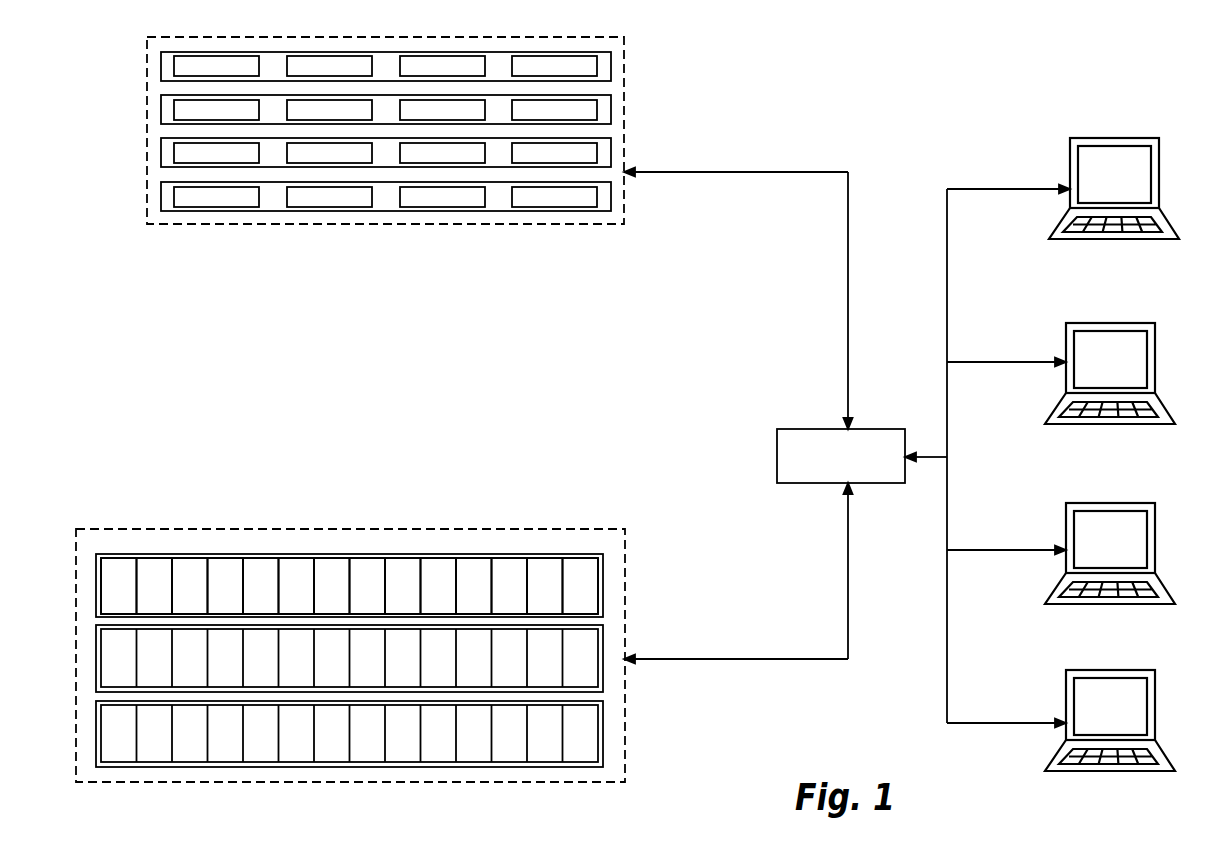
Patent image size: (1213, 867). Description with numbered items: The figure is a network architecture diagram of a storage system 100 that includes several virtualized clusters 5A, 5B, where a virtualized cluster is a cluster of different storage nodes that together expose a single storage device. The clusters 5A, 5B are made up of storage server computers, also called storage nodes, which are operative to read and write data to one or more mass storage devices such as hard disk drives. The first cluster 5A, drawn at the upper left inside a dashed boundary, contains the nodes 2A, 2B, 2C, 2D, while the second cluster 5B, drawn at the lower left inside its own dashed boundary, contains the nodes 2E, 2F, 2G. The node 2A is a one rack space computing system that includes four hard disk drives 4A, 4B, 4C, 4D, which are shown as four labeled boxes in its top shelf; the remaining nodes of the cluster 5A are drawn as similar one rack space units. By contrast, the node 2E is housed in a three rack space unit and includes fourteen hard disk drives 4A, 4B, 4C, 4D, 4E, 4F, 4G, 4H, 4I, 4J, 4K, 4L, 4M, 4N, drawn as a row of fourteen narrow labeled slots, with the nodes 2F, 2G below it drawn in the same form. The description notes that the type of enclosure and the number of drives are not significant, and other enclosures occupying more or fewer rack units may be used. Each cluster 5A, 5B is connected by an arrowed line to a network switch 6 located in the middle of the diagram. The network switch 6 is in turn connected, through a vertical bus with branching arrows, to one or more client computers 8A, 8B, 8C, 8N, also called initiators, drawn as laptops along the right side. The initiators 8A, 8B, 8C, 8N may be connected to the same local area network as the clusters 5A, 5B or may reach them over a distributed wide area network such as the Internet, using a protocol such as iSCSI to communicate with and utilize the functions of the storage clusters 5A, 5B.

The storage system 100 is at (920, 92).
The virtualized cluster 5A is at (617, 58).
The virtualized cluster 5B is at (617, 553).
The storage server computer 2A is at (603, 75).
The storage server computer 2B is at (603, 120).
The storage server computer 2C is at (603, 163).
The storage server computer 2D is at (603, 207).
The storage server computer 2E is at (600, 598).
The storage server computer 2F is at (600, 667).
The storage server computer 2G is at (600, 740).
The hard disk drive 4A is at (205, 75).
The hard disk drive 4B is at (318, 75).
The hard disk drive 4C is at (431, 75).
The hard disk drive 4D is at (543, 75).
The hard disk drive 4E is at (249, 598).
The hard disk drive 4F is at (285, 598).
The hard disk drive 4G is at (344, 598).
The hard disk drive 4H is at (355, 598).
The hard disk drive 4I is at (412, 598).
The hard disk drive 4J is at (449, 598).
The hard disk drive 4K is at (462, 598).
The hard disk drive 4L is at (498, 598).
The hard disk drive 4M is at (532, 598).
The hard disk drive 4N is at (568, 598).
The network switch 6 is at (873, 483).
The client computer 8A is at (1153, 242).
The client computer 8B is at (1150, 426).
The client computer 8C is at (1150, 606).
The client computer 8N is at (1150, 773).